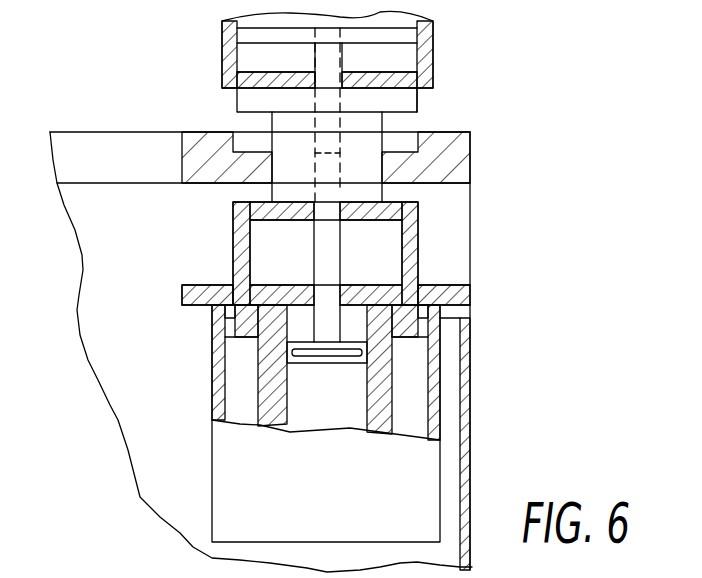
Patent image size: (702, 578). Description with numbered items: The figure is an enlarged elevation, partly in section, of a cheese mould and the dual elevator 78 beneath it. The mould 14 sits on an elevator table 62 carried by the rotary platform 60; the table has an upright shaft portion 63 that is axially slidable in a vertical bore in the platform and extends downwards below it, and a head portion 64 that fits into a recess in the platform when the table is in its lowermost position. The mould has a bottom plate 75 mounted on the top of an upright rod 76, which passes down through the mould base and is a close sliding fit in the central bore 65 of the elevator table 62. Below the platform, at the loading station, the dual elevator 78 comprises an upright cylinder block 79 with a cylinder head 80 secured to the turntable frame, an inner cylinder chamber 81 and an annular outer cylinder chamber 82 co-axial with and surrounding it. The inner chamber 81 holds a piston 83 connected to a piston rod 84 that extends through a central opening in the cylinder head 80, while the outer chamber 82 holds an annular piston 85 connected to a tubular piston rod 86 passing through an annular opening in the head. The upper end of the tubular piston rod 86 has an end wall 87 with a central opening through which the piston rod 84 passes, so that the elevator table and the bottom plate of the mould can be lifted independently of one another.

The cheese mould 14 is at (442, 59).
The bottom plate 75 is at (262, 33).
The upright rod 76 is at (315, 55).
The elevator table 62 is at (237, 101).
The head portion 64 is at (423, 101).
The shaft portion 63 is at (383, 119).
The central bore 65 is at (340, 188).
The rotary platform 60 is at (472, 167).
The tubular piston rod 86 is at (418, 249).
The end wall 87 is at (380, 223).
The piston rod 84 is at (325, 256).
The cylinder head 80 is at (182, 300).
The annular piston 85 is at (424, 329).
The annular outer cylinder chamber 82 is at (408, 375).
The inner cylinder chamber 81 is at (347, 407).
The piston 83 is at (335, 362).
The cylinder block 79 is at (210, 458).
The dual elevator 78 is at (192, 391).